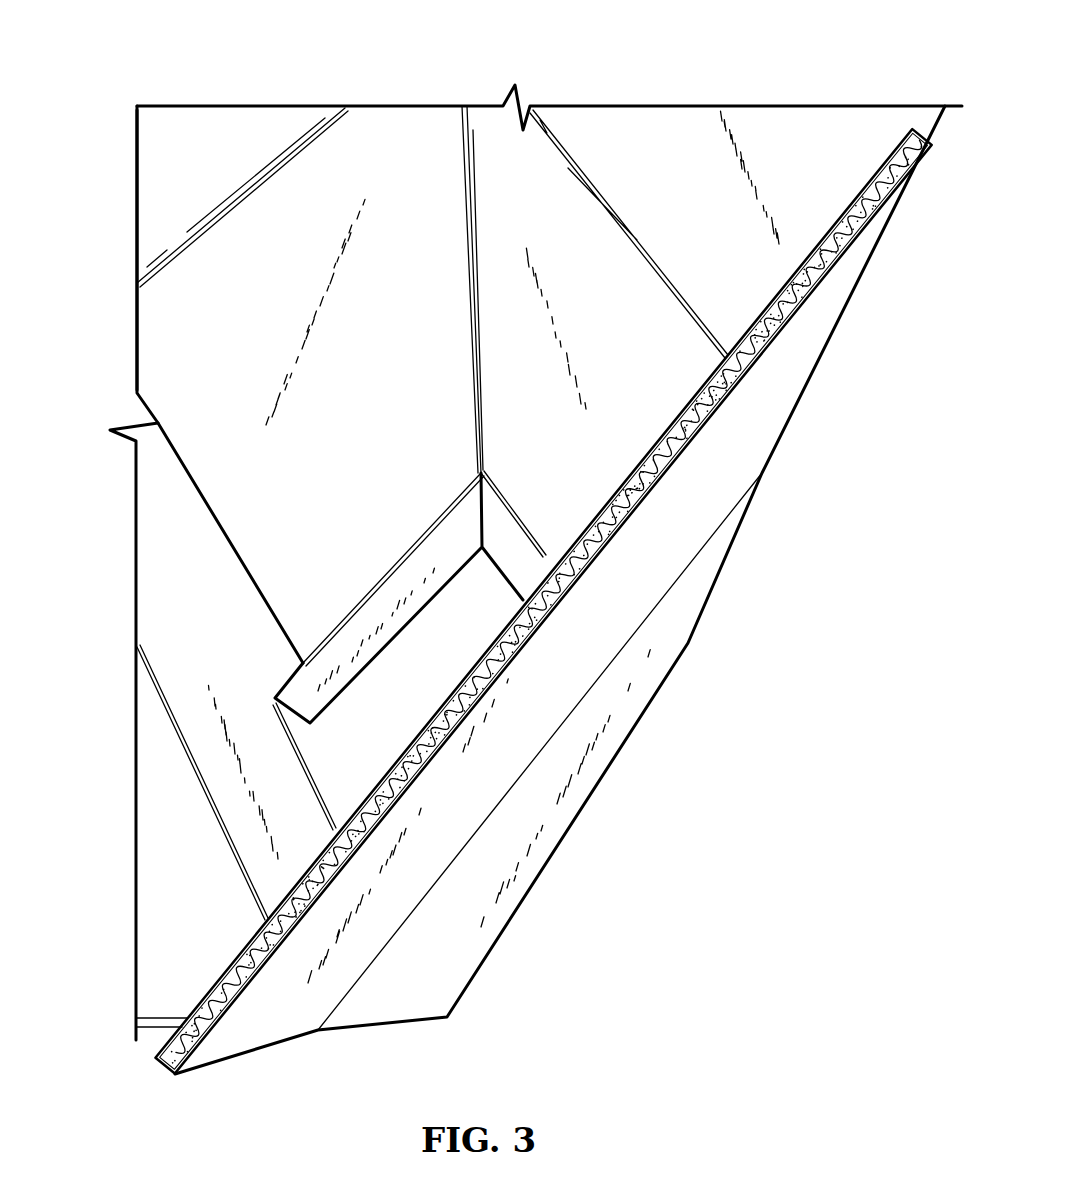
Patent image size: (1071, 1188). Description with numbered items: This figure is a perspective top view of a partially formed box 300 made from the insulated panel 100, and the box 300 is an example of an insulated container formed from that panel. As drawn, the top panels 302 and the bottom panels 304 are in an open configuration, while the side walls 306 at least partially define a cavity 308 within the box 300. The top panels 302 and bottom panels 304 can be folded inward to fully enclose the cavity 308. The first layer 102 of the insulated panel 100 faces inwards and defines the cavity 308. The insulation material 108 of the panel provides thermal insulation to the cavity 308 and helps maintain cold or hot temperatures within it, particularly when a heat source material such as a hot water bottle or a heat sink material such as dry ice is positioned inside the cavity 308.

The box 300 is at (157, 68).
The insulated panel 100 is at (180, 122).
The first layer 102 is at (232, 280).
The insulation material 108 is at (743, 377).
The top panels 302 is at (265, 118).
The bottom panels 304 is at (513, 558).
The side walls 306 is at (523, 195).
The cavity 308 is at (379, 172).